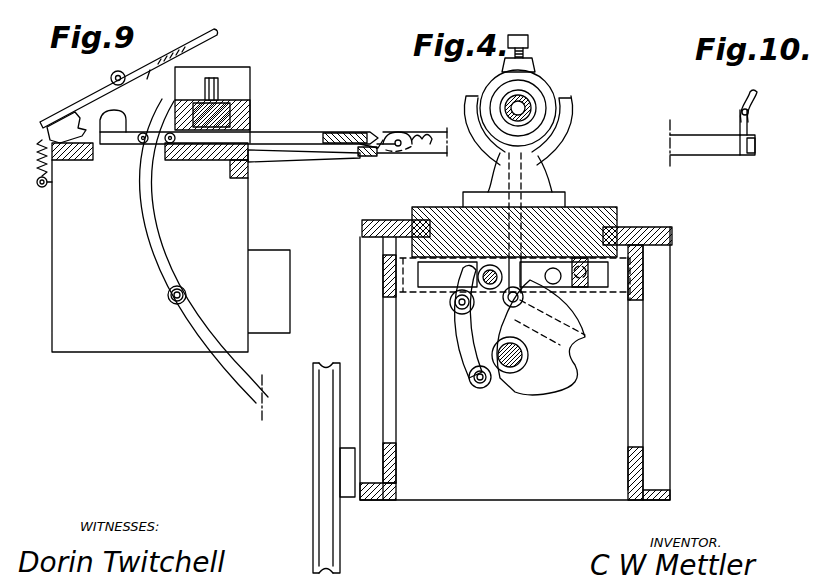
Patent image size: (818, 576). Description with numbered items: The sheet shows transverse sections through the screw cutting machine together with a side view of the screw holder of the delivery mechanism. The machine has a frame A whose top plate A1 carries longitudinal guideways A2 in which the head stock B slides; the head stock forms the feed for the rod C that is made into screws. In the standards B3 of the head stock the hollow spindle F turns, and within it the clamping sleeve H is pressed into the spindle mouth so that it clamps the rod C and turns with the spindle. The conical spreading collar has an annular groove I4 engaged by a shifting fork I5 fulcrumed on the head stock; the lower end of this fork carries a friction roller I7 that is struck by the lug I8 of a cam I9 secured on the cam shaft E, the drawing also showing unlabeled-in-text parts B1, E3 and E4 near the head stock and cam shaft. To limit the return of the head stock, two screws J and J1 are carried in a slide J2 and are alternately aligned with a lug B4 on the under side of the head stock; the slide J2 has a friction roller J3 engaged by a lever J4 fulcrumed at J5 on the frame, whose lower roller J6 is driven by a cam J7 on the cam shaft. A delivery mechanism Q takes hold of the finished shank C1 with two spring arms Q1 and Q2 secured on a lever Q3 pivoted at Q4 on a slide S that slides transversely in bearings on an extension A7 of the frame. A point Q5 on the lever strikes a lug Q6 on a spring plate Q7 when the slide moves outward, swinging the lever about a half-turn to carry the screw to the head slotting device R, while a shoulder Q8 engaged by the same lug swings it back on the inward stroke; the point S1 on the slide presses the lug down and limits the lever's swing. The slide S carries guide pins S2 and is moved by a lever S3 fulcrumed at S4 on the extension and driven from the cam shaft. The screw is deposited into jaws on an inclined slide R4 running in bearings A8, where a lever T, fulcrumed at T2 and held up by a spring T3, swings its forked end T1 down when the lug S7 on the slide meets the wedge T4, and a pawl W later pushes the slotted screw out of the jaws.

In FIG. 4, the frame A is at (528, 363).
In FIG. 4, the top plate A1 is at (374, 218).
In FIG. 4, the guideways A2 is at (622, 225).
In FIG. 9, the extension A7 is at (212, 162).
In FIG. 9, the bearings A8 is at (316, 72).
In FIG. 4, the head stock B is at (570, 222).
In FIG. 4, the plate direction arrow B1 is at (593, 390).
In FIG. 4, the standards B3 is at (528, 178).
In FIG. 4, the lug B4 is at (592, 240).
In FIG. 4, the rod C is at (543, 75).
In FIG. 10, the shank C1 is at (756, 113).
In FIG. 4, the cam shaft E is at (510, 373).
In FIG. 4, the shaft bracket E3 is at (352, 474).
In FIG. 4, the pulley wheel E4 is at (327, 475).
In FIG. 4, the spindle F is at (533, 107).
In FIG. 4, the clamping sleeve H is at (507, 103).
In FIG. 4, the annular groove I4 is at (530, 100).
In FIG. 4, the shifting fork I5 is at (567, 130).
In FIG. 4, the friction roller I7 is at (516, 307).
In FIG. 4, the lug I8 is at (570, 333).
In FIG. 4, the cam I9 is at (565, 382).
In FIG. 4, the screw J is at (590, 282).
In FIG. 4, the screw J1 is at (442, 92).
In FIG. 4, the slide J2 is at (458, 314).
In FIG. 4, the friction roller J3 is at (492, 289).
In FIG. 4, the lever J4 is at (463, 340).
In FIG. 4, the fulcrum J5 is at (452, 303).
In FIG. 4, the friction roller J6 is at (478, 389).
In FIG. 4, the cam J7 is at (546, 387).
In FIG. 9, the delivery mechanism Q is at (382, 96).
In FIG. 10, the spring arm Q1 is at (742, 110).
In FIG. 10, the spring arm Q2 is at (758, 95).
In FIG. 9, the lever Q3 is at (432, 150).
In FIG. 10, the lever Q3 is at (728, 155).
In FIG. 9, the pivot Q4 is at (400, 140).
In FIG. 9, the point Q5 is at (383, 154).
In FIG. 9, the lug Q6 is at (363, 156).
In FIG. 9, the spring plate Q7 is at (306, 158).
In FIG. 9, the shoulder Q8 is at (429, 135).
In FIG. 9, the head slotting device R is at (208, 44).
In FIG. 9, the slide R4 is at (250, 98).
In FIG. 9, the slide S is at (296, 136).
In FIG. 9, the point S1 is at (368, 140).
In FIG. 9, the guide pins S2 is at (172, 145).
In FIG. 9, the lever S3 is at (155, 243).
In FIG. 9, the fulcrum S4 is at (167, 305).
In FIG. 9, the lug S7 is at (103, 126).
In FIG. 9, the lever T is at (153, 70).
In FIG. 9, the forked end T1 is at (129, 73).
In FIG. 9, the fulcrum T2 is at (112, 76).
In FIG. 9, the spring T3 is at (37, 145).
In FIG. 9, the wedge T4 is at (65, 118).
In FIG. 9, the pawl W is at (213, 83).